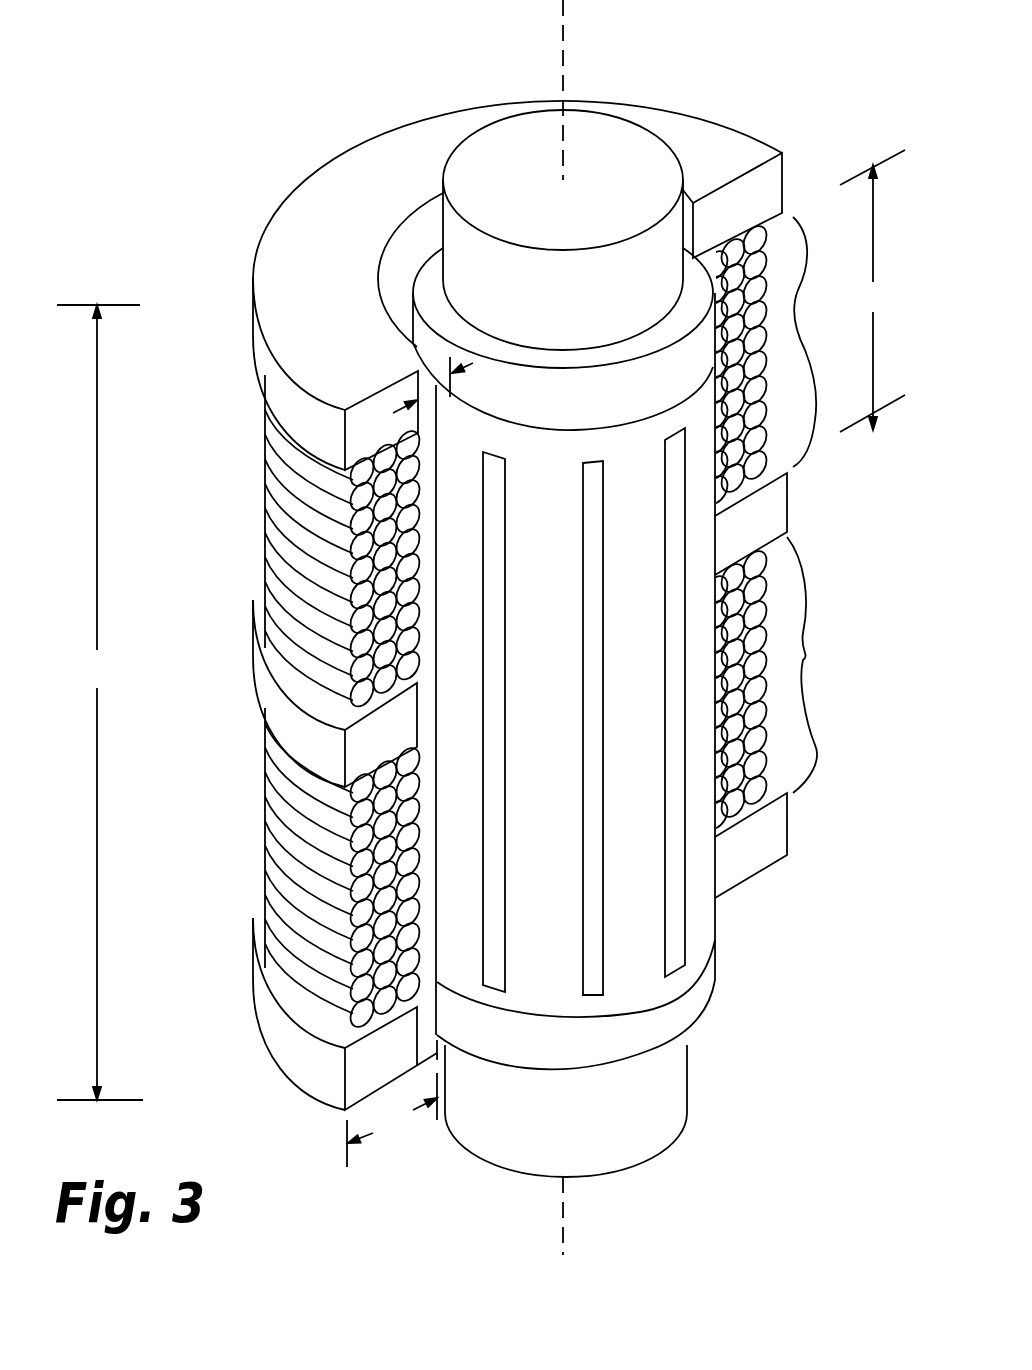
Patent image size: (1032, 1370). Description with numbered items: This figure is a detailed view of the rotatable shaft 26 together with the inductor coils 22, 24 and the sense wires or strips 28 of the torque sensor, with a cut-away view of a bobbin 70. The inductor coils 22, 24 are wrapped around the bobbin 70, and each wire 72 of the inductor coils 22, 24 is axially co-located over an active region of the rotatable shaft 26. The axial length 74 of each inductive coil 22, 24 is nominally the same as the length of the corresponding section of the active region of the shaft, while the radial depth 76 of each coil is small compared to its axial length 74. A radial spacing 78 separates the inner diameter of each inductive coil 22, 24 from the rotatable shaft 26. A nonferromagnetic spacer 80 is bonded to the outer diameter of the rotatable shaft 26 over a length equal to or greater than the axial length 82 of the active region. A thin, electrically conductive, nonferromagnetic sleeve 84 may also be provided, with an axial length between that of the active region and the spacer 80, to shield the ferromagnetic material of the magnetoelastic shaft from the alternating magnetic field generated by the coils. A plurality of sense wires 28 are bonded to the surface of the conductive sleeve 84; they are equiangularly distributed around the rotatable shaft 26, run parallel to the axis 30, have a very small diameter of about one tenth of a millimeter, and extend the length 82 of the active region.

The inductor coil 22 is at (816, 665).
The inductor coil 24 is at (817, 342).
The rotatable shaft 26 is at (578, 127).
The sense wires or strips 28 is at (680, 935).
The axis 30 is at (565, 28).
The bobbin 70 is at (725, 155).
The coils or wire 72 is at (295, 572).
The axial length 74 is at (872, 291).
The radial depth 76 is at (387, 1120).
The radial spacing 78 is at (432, 393).
The spacer 80 is at (615, 1033).
The axial length of the active region 82 is at (100, 702).
The conductive sleeve 84 is at (548, 983).